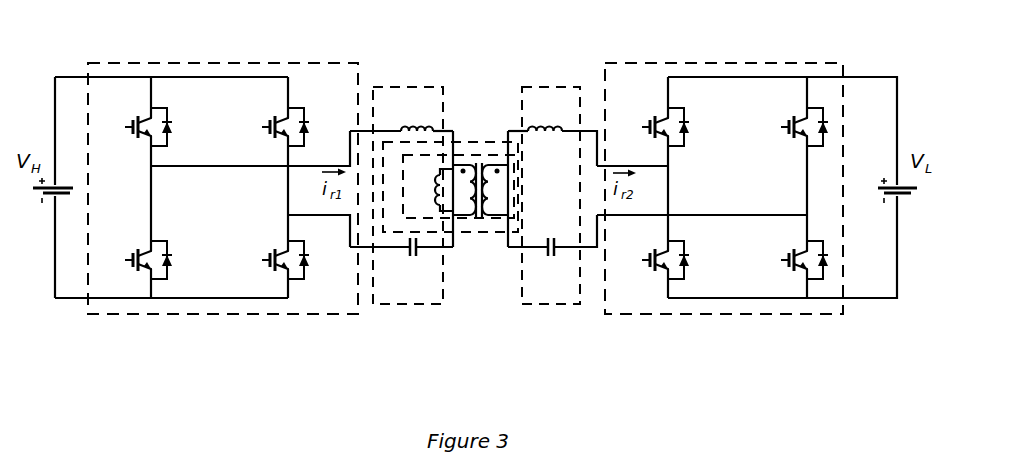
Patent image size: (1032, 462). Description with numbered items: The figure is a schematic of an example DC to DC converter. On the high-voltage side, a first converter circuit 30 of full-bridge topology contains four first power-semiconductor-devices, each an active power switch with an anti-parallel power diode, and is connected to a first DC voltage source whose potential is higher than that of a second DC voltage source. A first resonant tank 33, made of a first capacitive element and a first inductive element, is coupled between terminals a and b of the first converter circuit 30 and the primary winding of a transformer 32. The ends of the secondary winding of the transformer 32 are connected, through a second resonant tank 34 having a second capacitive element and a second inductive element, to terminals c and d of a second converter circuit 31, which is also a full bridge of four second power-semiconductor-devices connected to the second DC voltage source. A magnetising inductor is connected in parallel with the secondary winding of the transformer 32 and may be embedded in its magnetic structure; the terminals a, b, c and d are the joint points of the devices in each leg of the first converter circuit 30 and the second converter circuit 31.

The first converter circuit 30 is at (307, 315).
The second converter circuit 31 is at (670, 315).
The transformer 32 is at (448, 221).
The first resonant tank 33 is at (422, 86).
The second resonant tank 34 is at (552, 86).